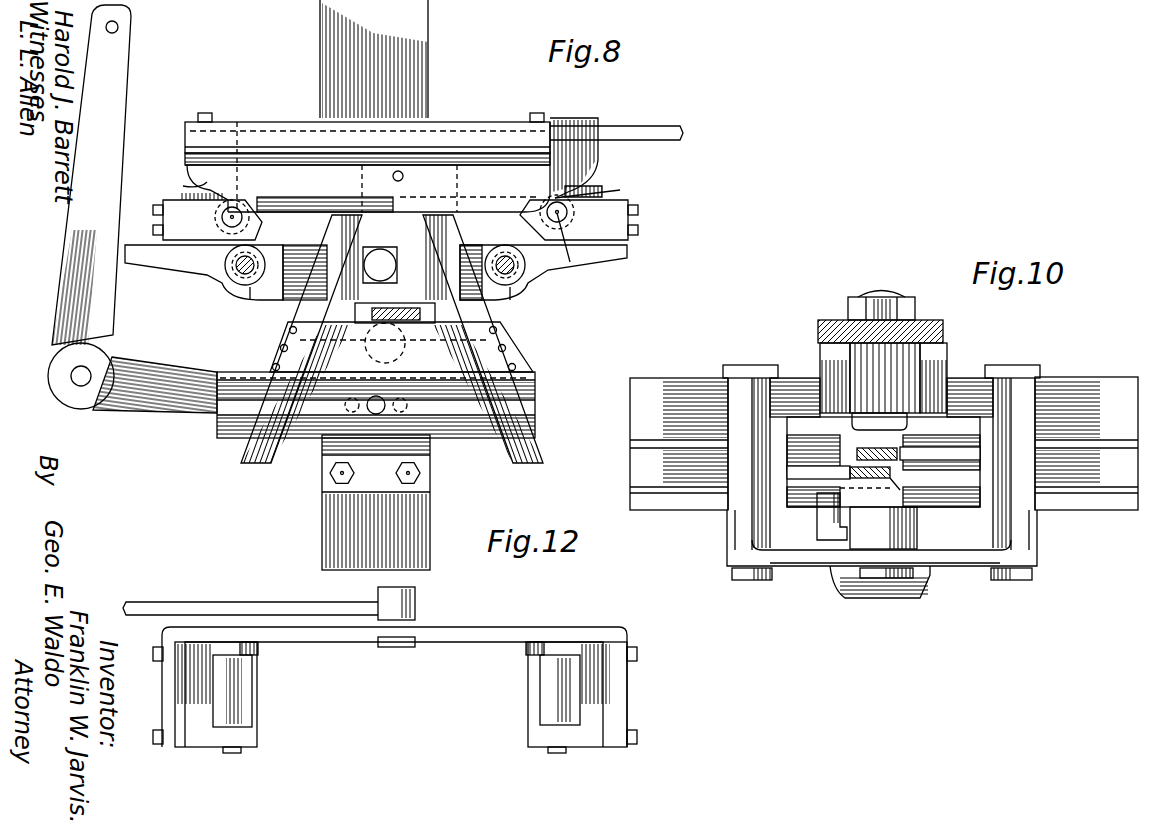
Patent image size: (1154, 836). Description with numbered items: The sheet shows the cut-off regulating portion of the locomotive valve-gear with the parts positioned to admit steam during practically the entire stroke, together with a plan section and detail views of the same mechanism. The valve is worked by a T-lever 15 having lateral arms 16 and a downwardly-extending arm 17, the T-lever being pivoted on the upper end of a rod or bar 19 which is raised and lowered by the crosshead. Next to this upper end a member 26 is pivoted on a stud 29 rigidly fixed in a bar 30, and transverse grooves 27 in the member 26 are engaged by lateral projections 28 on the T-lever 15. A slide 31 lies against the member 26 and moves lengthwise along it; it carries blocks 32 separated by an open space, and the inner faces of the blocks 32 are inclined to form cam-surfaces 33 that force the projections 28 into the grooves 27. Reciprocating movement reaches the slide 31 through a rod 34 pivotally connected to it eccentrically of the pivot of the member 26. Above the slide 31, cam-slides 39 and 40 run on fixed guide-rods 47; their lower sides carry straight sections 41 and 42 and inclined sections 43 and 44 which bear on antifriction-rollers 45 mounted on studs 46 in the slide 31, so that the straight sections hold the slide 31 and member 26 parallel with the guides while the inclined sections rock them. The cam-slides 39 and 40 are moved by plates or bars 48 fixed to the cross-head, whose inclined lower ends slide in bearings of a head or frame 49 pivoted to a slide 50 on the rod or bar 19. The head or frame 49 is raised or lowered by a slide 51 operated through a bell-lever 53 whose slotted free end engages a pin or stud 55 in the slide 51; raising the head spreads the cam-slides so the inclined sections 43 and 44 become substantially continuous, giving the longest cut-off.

In FIG. 10, the T-lever 15 is at (912, 563).
In FIG. 10, the lateral arms 16 is at (793, 562).
In FIG. 10, the downwardly-extending arm 17 is at (903, 600).
In FIG. 10, the rod or bar 19 is at (867, 521).
In FIG. 8, the member 26 is at (180, 273).
In FIG. 10, the member 26 is at (884, 443).
In FIG. 8, the transverse grooves 27 is at (250, 287).
In FIG. 8, the lateral projections 28 is at (240, 277).
In FIG. 10, the lateral projections 28 is at (881, 457).
In FIG. 8, the stud 29 is at (394, 269).
In FIG. 10, the stud 29 is at (883, 386).
In FIG. 8, the bar 30 is at (415, 78).
In FIG. 10, the bar 30 is at (822, 321).
In FIG. 8, the slide 31 is at (595, 188).
In FIG. 12, the slide 31 is at (472, 635).
In FIG. 8, the blocks 32 is at (395, 220).
In FIG. 12, the blocks 32 is at (652, 696).
In FIG. 8, the cam-surfaces 33 is at (540, 223).
In FIG. 12, the cam-surfaces 33 is at (257, 648).
In FIG. 12, the rod 34 is at (223, 604).
In FIG. 8, the cam-slide 39 is at (579, 161).
In FIG. 8, the cam-slide 40 is at (466, 181).
In FIG. 8, the straight section 41 is at (367, 167).
In FIG. 8, the straight section 42 is at (389, 167).
In FIG. 8, the inclined section 43 is at (188, 185).
In FIG. 8, the inclined section 44 is at (233, 188).
In FIG. 8, the antifriction-rollers 45 is at (251, 228).
In FIG. 12, the antifriction-rollers 45 is at (252, 705).
In FIG. 8, the studs 46 is at (577, 248).
In FIG. 12, the studs 46 is at (237, 751).
In FIG. 8, the guide-rods 47 is at (682, 128).
In FIG. 8, the plates or bars 48 is at (272, 458).
In FIG. 10, the plates or bars 48 is at (942, 455).
In FIG. 8, the head or frame 49 is at (401, 347).
In FIG. 8, the slide 50 is at (385, 343).
In FIG. 8, the slide 51 is at (467, 432).
In FIG. 8, the bell-lever 53 is at (167, 372).
In FIG. 8, the pin or stud 55 is at (410, 350).